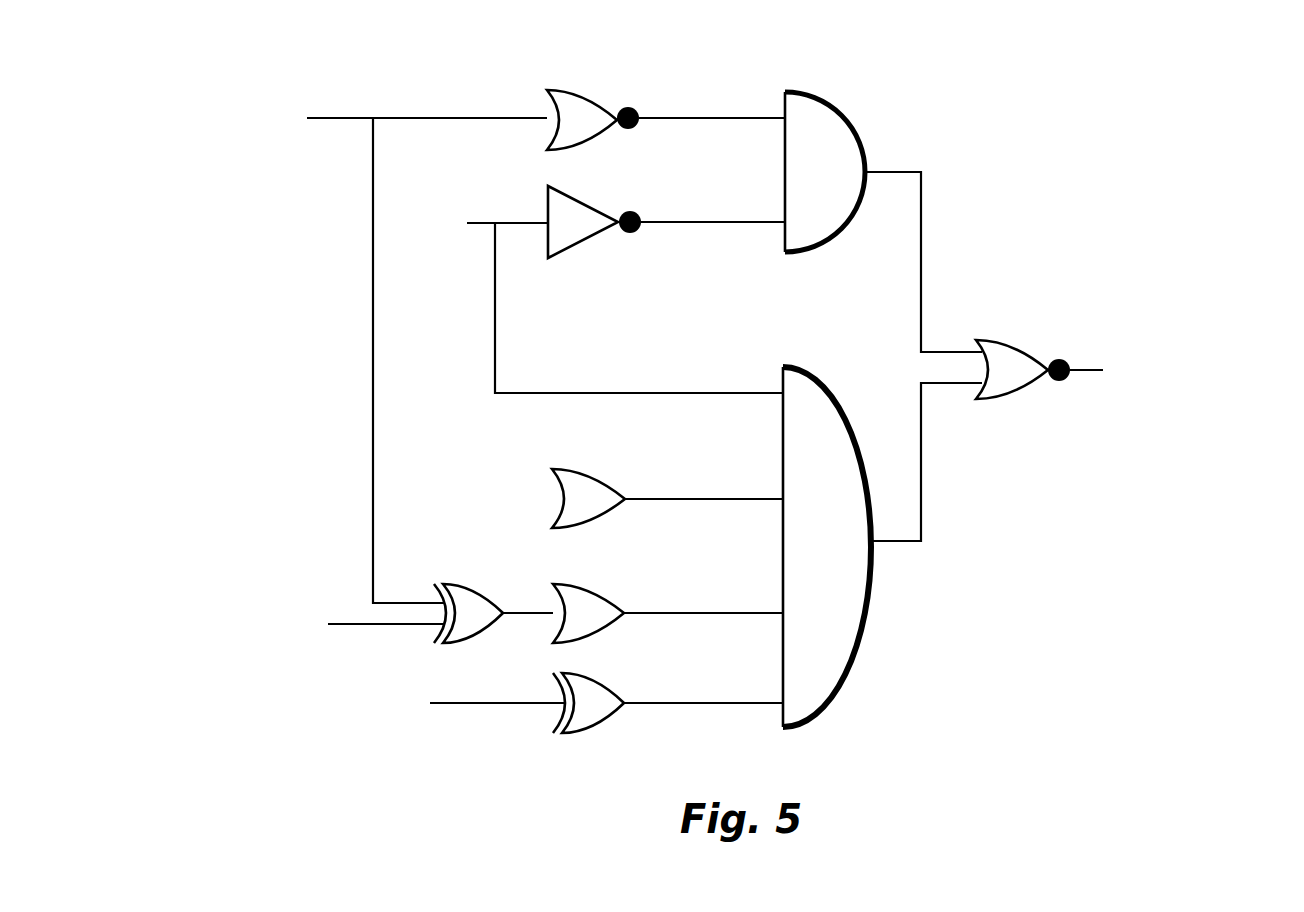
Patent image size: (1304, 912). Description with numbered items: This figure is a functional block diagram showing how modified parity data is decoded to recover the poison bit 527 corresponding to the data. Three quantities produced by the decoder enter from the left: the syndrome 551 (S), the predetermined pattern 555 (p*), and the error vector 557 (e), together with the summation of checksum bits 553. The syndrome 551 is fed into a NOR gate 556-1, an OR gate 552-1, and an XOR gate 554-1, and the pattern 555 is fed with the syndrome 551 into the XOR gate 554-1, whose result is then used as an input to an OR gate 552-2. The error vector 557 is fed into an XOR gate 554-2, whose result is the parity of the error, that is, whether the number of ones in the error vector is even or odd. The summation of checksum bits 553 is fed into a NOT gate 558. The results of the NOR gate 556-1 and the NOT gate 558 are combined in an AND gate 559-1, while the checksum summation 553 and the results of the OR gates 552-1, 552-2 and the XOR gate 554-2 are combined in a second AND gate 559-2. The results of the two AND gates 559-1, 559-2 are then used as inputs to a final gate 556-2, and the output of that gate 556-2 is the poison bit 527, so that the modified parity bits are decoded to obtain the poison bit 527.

The syndrome 551 is at (270, 117).
The summation of checksum bits 553 is at (410, 223).
The predetermined pattern 555 is at (298, 623).
The error vector 557 is at (410, 702).
The NOR gate 556-1 is at (582, 90).
The XOR gate 556-2 is at (1025, 342).
The NOT gate 558 is at (548, 186).
The AND gate 559-1 is at (818, 98).
The AND gate 559-2 is at (835, 404).
The OR gate 552-1 is at (593, 527).
The OR gate 552-2 is at (602, 637).
The XOR gate 554-1 is at (475, 632).
The XOR gate 554-2 is at (603, 723).
The poison bit 527 is at (1162, 352).